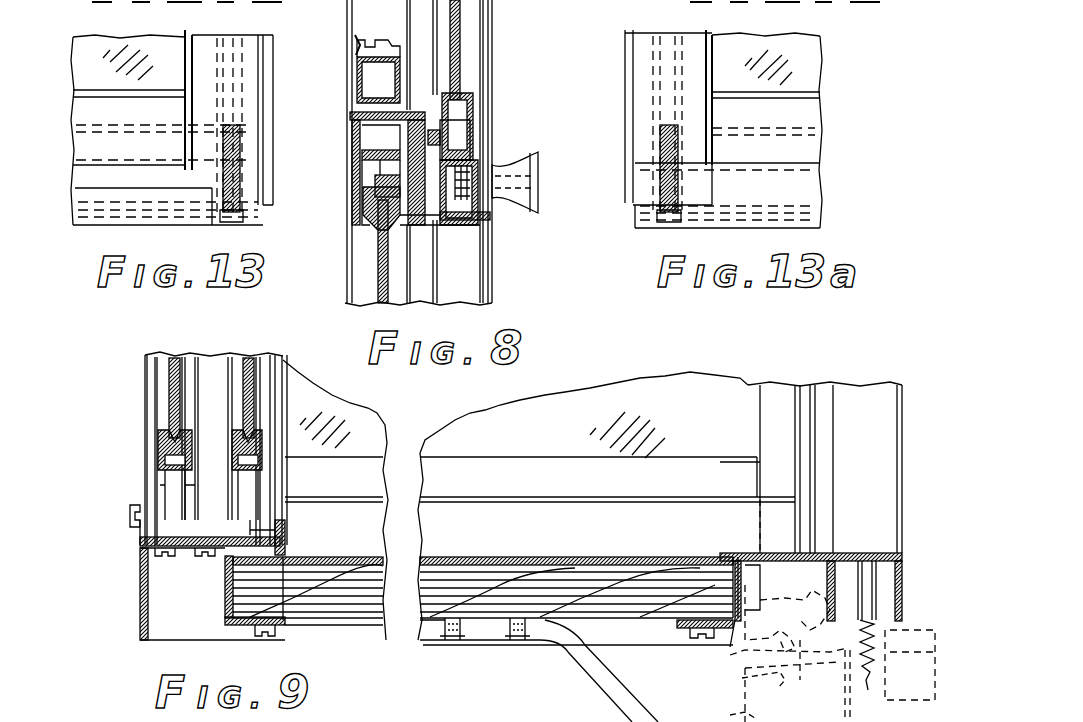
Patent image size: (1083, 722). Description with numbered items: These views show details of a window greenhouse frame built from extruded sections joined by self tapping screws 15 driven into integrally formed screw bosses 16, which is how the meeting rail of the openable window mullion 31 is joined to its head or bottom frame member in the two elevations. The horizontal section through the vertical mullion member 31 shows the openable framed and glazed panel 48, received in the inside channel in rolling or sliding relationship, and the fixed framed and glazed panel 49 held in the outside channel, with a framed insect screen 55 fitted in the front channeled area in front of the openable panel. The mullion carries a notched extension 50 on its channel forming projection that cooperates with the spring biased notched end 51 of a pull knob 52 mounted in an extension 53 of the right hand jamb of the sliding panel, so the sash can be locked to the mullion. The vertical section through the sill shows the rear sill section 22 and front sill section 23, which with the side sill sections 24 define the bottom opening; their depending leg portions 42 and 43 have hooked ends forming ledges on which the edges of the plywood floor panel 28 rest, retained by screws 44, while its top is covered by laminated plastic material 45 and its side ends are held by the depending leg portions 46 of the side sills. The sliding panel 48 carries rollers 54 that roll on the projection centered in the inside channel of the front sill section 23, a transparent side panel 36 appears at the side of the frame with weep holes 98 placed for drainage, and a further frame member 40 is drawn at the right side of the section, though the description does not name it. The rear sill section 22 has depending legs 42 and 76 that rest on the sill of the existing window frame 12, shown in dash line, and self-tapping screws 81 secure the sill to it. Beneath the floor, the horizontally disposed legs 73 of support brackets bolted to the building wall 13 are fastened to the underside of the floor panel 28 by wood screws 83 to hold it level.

In FIG. 9, the existing window frame 12 is at (755, 672).
In FIG. 9, the building wall 13 is at (755, 713).
In FIG. 13, the self tapping screws 15 is at (212, 225).
In FIG. 13A, the self tapping screws 15 is at (665, 224).
In FIG. 9, the self tapping screws 15 is at (130, 515).
In FIG. 13, the screw bosses 16 is at (262, 86).
In FIG. 13A, the screw bosses 16 is at (632, 82).
In FIG. 8, the screw bosses 16 is at (350, 128).
In FIG. 9, the rear sill section 22 is at (842, 553).
In FIG. 9, the front sill section 23 is at (138, 594).
In FIG. 9, the side sill sections 24 is at (656, 505).
In FIG. 9, the floor panel 28 is at (556, 588).
In FIG. 8, the vertical mullion member 31 is at (352, 186).
In FIG. 9, the transparent side panels 36 is at (475, 445).
In FIG. 9, the side jamb 40 is at (757, 438).
In FIG. 9, the depending leg portion 42 is at (745, 616).
In FIG. 9, the depending leg portion 43 is at (224, 610).
In FIG. 9, the screws 44 is at (270, 634).
In FIG. 9, the laminated plastic material 45 is at (480, 560).
In FIG. 9, the depending leg portions 46 is at (363, 640).
In FIG. 13, the framed and glazed panel 48 is at (93, 53).
In FIG. 13A, the framed and glazed panel 48 is at (802, 76).
In FIG. 8, the framed and glazed panel 48 is at (462, 22).
In FIG. 9, the framed and glazed panel 48 is at (258, 365).
In FIG. 8, the framed and glazed panel 49 is at (370, 250).
In FIG. 9, the framed and glazed panel 49 is at (170, 407).
In FIG. 8, the notched extension 50 is at (435, 232).
In FIG. 8, the spring biased notched end 51 is at (470, 152).
In FIG. 8, the pull knob 52 is at (528, 165).
In FIG. 8, the extension 53 is at (483, 212).
In FIG. 9, the rollers 54 is at (283, 540).
In FIG. 8, the framed insect screen 55 is at (355, 46).
In FIG. 9, the horizontally disposed legs 73 is at (488, 642).
In FIG. 9, the depending leg 76 is at (826, 578).
In FIG. 9, the self-tapping screws 81 is at (870, 580).
In FIG. 9, the wood screws 83 is at (447, 642).
In FIG. 9, the weep holes 98 is at (138, 537).